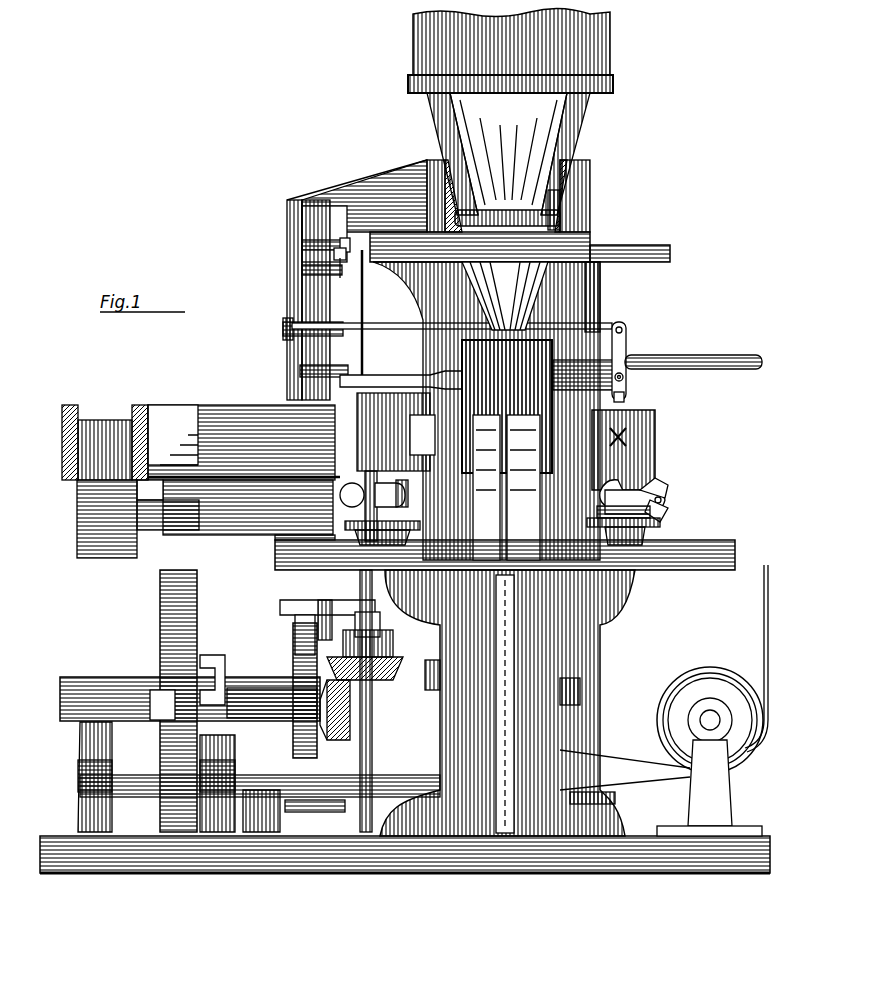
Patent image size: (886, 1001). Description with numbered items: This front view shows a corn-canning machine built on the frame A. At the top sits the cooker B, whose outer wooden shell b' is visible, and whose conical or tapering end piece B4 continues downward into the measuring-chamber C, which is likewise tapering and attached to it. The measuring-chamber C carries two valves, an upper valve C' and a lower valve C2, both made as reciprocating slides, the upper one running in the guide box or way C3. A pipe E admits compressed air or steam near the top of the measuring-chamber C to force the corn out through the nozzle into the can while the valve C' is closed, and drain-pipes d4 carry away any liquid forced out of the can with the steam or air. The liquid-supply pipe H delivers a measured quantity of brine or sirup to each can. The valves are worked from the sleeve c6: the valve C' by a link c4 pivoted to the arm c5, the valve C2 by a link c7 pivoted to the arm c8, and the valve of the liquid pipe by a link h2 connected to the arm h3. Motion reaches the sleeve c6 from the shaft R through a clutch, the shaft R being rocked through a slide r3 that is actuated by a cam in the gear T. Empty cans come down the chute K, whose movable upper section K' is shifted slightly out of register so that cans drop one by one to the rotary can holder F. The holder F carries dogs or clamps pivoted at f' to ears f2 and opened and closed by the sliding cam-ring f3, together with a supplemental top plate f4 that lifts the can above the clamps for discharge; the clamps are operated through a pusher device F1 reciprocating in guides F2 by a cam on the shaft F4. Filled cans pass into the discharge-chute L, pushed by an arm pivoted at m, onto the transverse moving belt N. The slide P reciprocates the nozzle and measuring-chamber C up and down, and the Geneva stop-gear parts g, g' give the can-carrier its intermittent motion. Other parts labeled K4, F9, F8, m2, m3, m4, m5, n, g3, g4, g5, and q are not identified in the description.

The cooker B is at (511, 41).
The outer wooden shell b' is at (521, 64).
The conical end piece B4 is at (520, 160).
The air or steam pipe E is at (562, 190).
The guide box C3 is at (580, 238).
The upper valve C' is at (630, 237).
The sleeve c6 is at (293, 297).
The arm c5 is at (345, 230).
The link c4 is at (345, 280).
The arm h3 is at (320, 328).
The link h2 is at (385, 325).
The arm c8 is at (342, 360).
The link c7 is at (397, 385).
The measuring-chamber C is at (505, 296).
The slide P is at (592, 300).
The movable chute section K' is at (570, 450).
The lower valve C2 is at (595, 378).
The drain-pipes d4 is at (690, 357).
The liquid pipe H is at (627, 395).
The can chute K is at (643, 450).
The supplemental top plate f4 is at (625, 490).
The ears or brackets f2 is at (660, 485).
The pivot f' is at (678, 491).
The rotary can holder F is at (664, 515).
The cam-ring f3 is at (650, 522).
The frame A is at (710, 548).
The discharge-chute L is at (205, 462).
The moving belt N is at (108, 470).
The block K4 is at (396, 432).
The gear T is at (160, 595).
The shaft F9 is at (165, 697).
The slide r3 is at (215, 660).
The pedestal F8 is at (156, 777).
The bracket m2 is at (290, 612).
The sleeve m3 is at (295, 635).
The gear column m5 is at (293, 665).
The shaft m4 is at (275, 690).
The sleeve n is at (345, 598).
The pivot m is at (372, 600).
The shaft R is at (300, 578).
The block g3 is at (393, 640).
The bevel gear g4 is at (395, 670).
The bevel gear g5 is at (345, 715).
The pusher device F1 is at (585, 612).
The guides F2 is at (585, 642).
The shaft F4 is at (265, 780).
The Geneva stop-gear member g' is at (296, 843).
The Geneva stop-gear member g is at (362, 847).
The pulley q is at (615, 798).